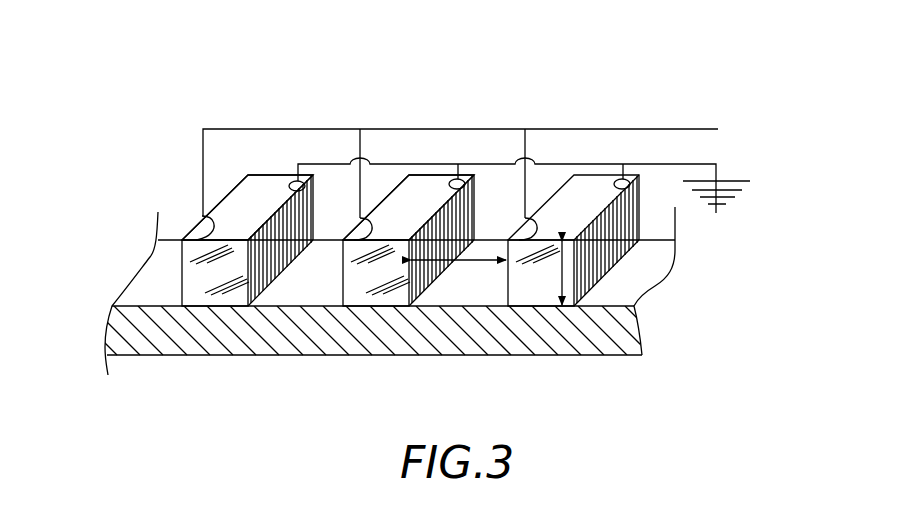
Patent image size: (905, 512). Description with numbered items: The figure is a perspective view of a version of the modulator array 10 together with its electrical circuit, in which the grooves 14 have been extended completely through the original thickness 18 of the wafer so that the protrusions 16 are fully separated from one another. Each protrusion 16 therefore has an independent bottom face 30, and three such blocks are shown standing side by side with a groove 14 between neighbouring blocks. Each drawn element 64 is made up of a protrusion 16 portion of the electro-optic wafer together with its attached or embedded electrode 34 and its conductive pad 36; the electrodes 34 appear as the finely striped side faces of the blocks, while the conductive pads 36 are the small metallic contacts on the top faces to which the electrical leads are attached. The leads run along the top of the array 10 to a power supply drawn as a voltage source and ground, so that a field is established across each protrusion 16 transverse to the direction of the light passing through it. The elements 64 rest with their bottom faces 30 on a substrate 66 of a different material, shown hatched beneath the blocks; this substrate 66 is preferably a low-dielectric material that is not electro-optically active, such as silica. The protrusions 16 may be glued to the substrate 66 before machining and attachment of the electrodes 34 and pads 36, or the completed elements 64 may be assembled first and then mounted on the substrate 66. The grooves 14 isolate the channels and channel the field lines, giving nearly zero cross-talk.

The modulator array 10 is at (688, 99).
The protrusion 16 is at (190, 267).
The element 64 is at (430, 193).
The conductive pad 36 is at (618, 178).
The electrode 34 is at (338, 264).
The groove 14 is at (452, 260).
The original thickness 18 is at (557, 267).
The bottom face 30 is at (540, 311).
The substrate 66 is at (592, 320).